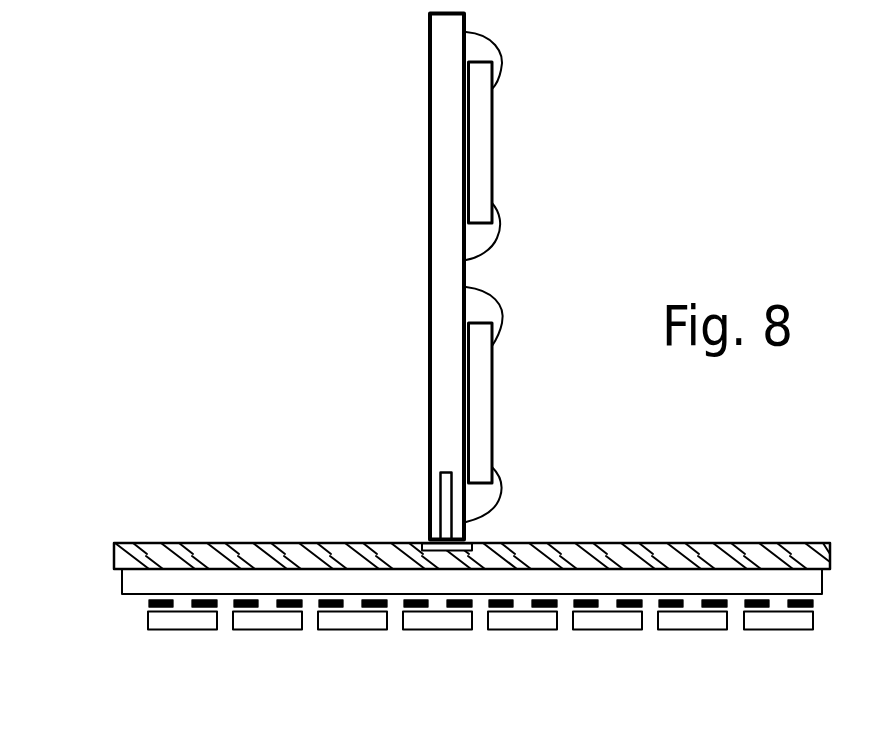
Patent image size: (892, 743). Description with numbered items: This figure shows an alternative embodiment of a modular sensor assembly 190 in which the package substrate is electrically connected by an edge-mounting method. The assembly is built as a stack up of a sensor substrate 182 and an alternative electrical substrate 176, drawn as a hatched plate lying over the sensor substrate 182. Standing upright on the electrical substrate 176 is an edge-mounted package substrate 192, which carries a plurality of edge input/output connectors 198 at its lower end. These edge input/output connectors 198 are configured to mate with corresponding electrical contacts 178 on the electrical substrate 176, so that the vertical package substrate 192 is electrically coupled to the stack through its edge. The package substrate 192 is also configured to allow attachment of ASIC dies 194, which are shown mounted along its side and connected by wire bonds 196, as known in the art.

The electrical substrate 176 is at (658, 547).
The electrical contacts 178 is at (472, 541).
The sensor substrate 182 is at (132, 594).
The modular sensor assembly 190 is at (292, 221).
The package substrate 192 is at (438, 310).
The ASIC dies 194 is at (483, 164).
The wire bonds 196 is at (497, 242).
The edge input/output connectors 198 is at (440, 498).